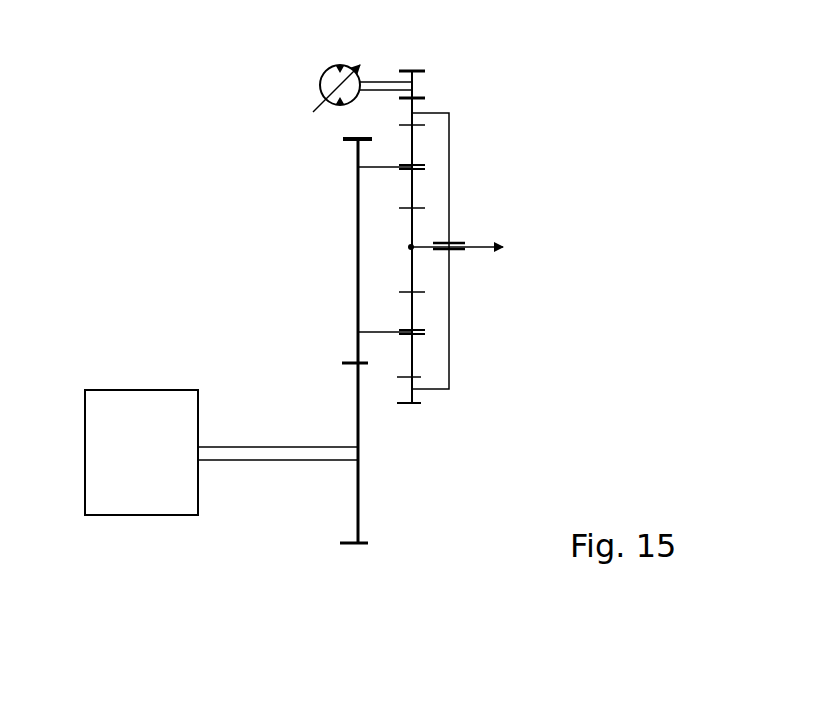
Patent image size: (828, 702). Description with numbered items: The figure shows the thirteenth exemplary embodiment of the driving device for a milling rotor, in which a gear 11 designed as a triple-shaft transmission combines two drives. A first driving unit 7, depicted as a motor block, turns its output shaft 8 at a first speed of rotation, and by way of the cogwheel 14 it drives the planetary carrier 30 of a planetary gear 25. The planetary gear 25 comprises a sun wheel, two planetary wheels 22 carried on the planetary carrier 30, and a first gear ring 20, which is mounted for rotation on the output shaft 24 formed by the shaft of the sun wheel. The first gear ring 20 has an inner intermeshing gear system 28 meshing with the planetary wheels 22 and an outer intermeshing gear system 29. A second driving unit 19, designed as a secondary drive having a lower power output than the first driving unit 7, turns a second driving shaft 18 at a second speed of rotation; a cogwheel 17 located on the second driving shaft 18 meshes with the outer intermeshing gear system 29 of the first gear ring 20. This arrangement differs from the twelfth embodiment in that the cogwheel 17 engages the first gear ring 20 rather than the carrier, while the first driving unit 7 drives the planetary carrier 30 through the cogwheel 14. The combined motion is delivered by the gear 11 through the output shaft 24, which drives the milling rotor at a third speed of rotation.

The first driving unit 7 is at (137, 502).
The output shaft 8 is at (273, 457).
The gear 11 is at (310, 215).
The cogwheel 14 is at (357, 503).
The cogwheel 17 is at (413, 78).
The second driving shaft 18 is at (378, 83).
The second driving unit 19 is at (327, 80).
The first gear ring 20 is at (450, 190).
The planetary wheels 22 is at (413, 143).
The output shaft 24 is at (473, 248).
The planetary gear 25 is at (567, 363).
The inner intermeshing gear system 28 is at (417, 377).
The outer intermeshing gear system 29 is at (420, 98).
The planetary carrier 30 is at (355, 292).